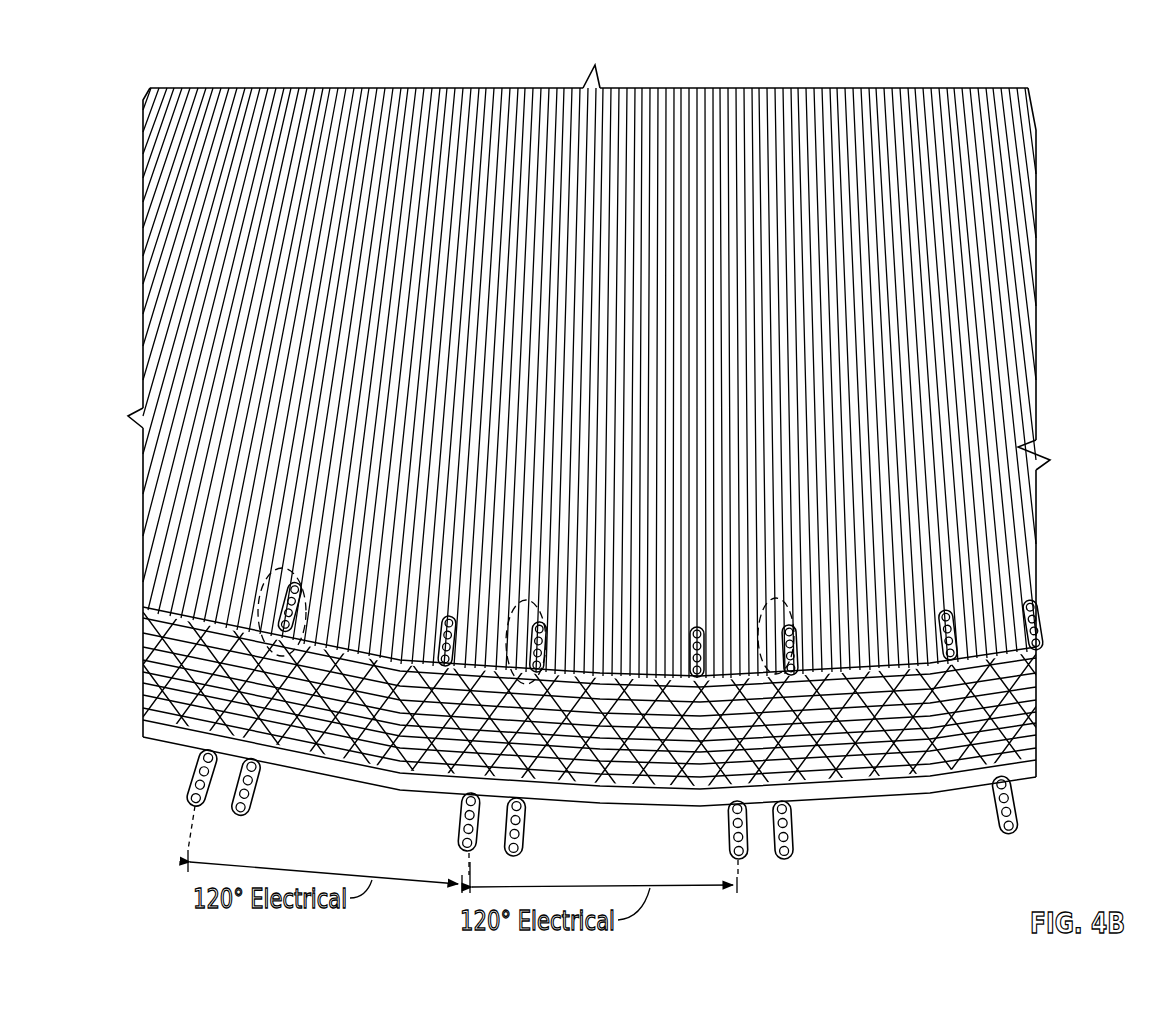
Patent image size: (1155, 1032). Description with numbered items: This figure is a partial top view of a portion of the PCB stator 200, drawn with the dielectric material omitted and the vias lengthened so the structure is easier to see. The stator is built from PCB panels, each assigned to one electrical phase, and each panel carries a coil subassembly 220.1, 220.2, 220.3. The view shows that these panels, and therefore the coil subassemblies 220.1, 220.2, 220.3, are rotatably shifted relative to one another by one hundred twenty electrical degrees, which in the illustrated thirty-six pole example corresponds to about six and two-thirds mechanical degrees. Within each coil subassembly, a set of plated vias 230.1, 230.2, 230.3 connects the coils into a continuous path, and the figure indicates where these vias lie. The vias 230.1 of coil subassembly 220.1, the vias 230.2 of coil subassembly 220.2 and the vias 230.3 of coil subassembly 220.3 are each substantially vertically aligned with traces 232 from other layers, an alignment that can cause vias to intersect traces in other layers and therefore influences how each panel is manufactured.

The PCB stator 200 is at (982, 86).
The coil subassembly 220.1 is at (143, 717).
The coil subassembly 220.2 is at (462, 791).
The coil subassembly 220.3 is at (712, 797).
The plated vias 230.1 is at (282, 590).
The plated vias 230.2 is at (542, 612).
The plated vias 230.3 is at (792, 612).
The traces 232 is at (861, 806).